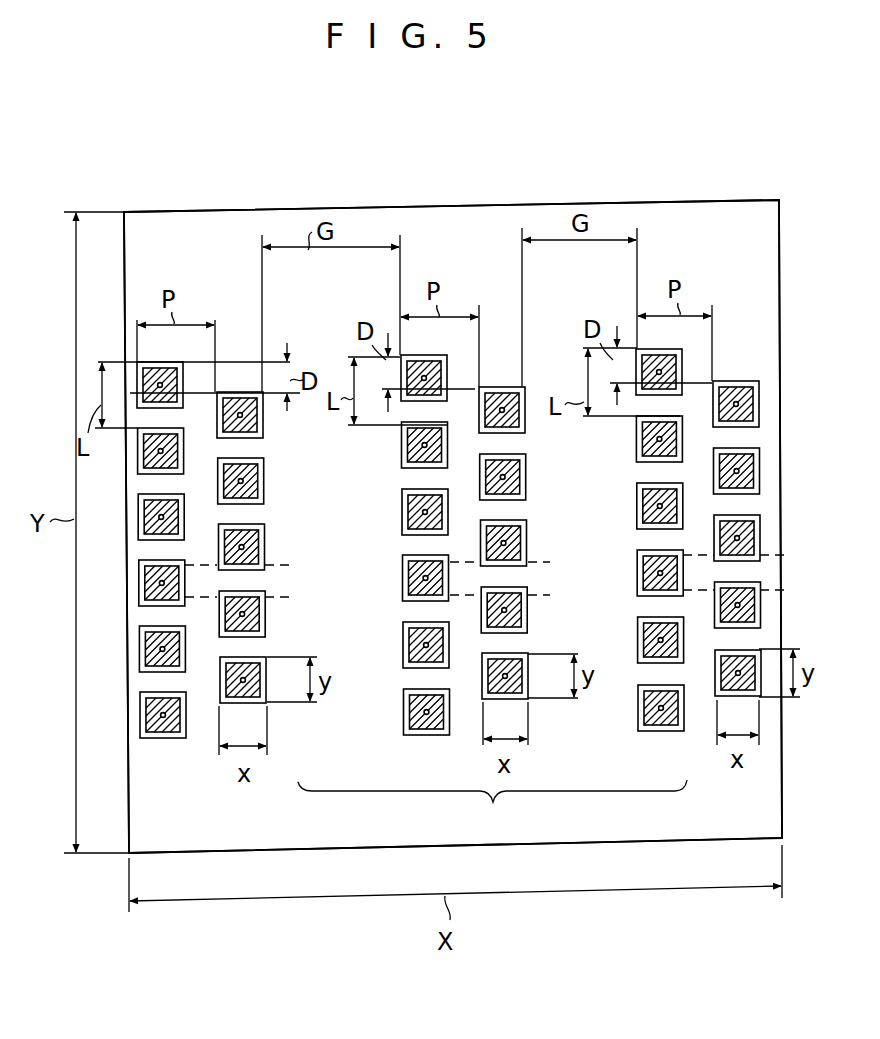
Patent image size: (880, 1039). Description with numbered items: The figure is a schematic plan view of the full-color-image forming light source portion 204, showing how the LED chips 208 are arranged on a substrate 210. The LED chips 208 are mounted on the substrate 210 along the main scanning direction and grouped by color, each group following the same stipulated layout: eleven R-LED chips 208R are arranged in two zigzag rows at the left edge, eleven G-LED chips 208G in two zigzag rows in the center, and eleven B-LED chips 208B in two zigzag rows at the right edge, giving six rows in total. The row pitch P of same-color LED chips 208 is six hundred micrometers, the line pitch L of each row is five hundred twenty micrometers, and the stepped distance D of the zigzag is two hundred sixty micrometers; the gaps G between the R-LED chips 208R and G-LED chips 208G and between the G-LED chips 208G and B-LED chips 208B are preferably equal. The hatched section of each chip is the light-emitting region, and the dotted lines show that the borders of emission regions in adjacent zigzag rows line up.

The full-color-image forming light source portion 204 is at (236, 192).
The substrate 210 is at (535, 220).
The LED chips 208 is at (492, 807).
The R-LED chips 208R is at (265, 503).
The G-LED chips 208G is at (402, 602).
The B-LED chips 208B is at (637, 590).